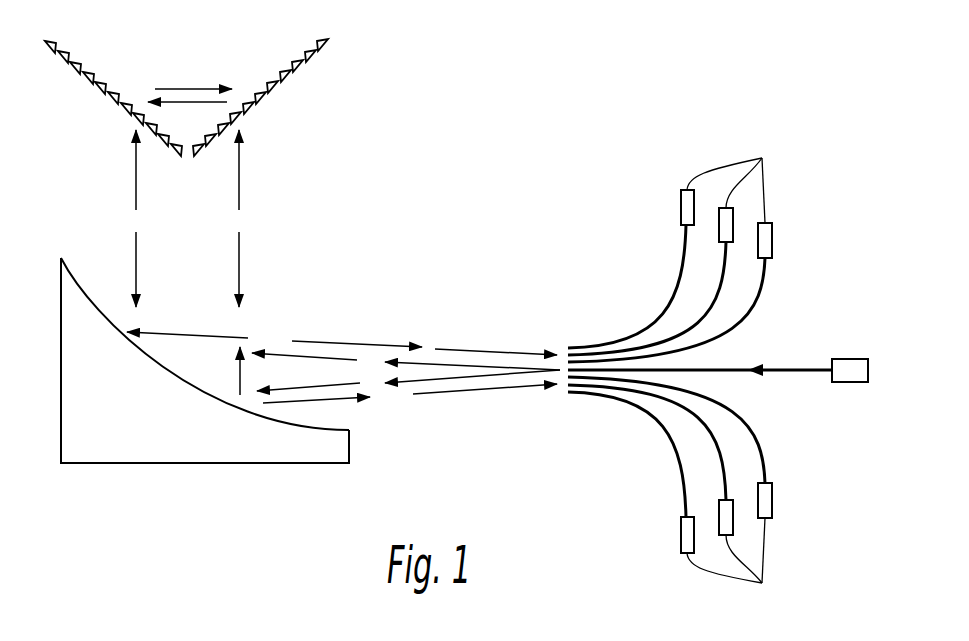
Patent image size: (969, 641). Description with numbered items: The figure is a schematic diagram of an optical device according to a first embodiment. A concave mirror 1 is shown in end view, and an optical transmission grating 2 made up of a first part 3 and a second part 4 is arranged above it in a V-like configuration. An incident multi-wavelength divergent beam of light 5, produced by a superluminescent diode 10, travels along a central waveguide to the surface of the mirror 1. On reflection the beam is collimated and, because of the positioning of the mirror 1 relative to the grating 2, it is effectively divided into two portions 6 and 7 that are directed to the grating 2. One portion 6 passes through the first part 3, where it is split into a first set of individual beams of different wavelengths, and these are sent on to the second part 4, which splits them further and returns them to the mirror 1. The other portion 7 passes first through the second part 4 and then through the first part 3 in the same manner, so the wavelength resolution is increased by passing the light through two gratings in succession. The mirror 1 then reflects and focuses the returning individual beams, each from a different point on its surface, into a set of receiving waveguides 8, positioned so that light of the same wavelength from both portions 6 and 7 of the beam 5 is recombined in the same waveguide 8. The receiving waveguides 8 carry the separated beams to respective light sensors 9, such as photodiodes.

The concave mirror 1 is at (290, 448).
The optical transmission grating 2 is at (202, 88).
The first part 3 is at (80, 62).
The second part 4 is at (297, 63).
The incident multi-wavelength divergent beam of light 5 is at (800, 372).
The one portion of the collimated multi-wavelength beam 6 is at (177, 89).
The other portion of the collimated multi-wavelength beam 7 is at (200, 102).
The receiving waveguides 8 is at (658, 278).
The light sensors 9 is at (727, 371).
The superluminescent diode 10 is at (850, 362).